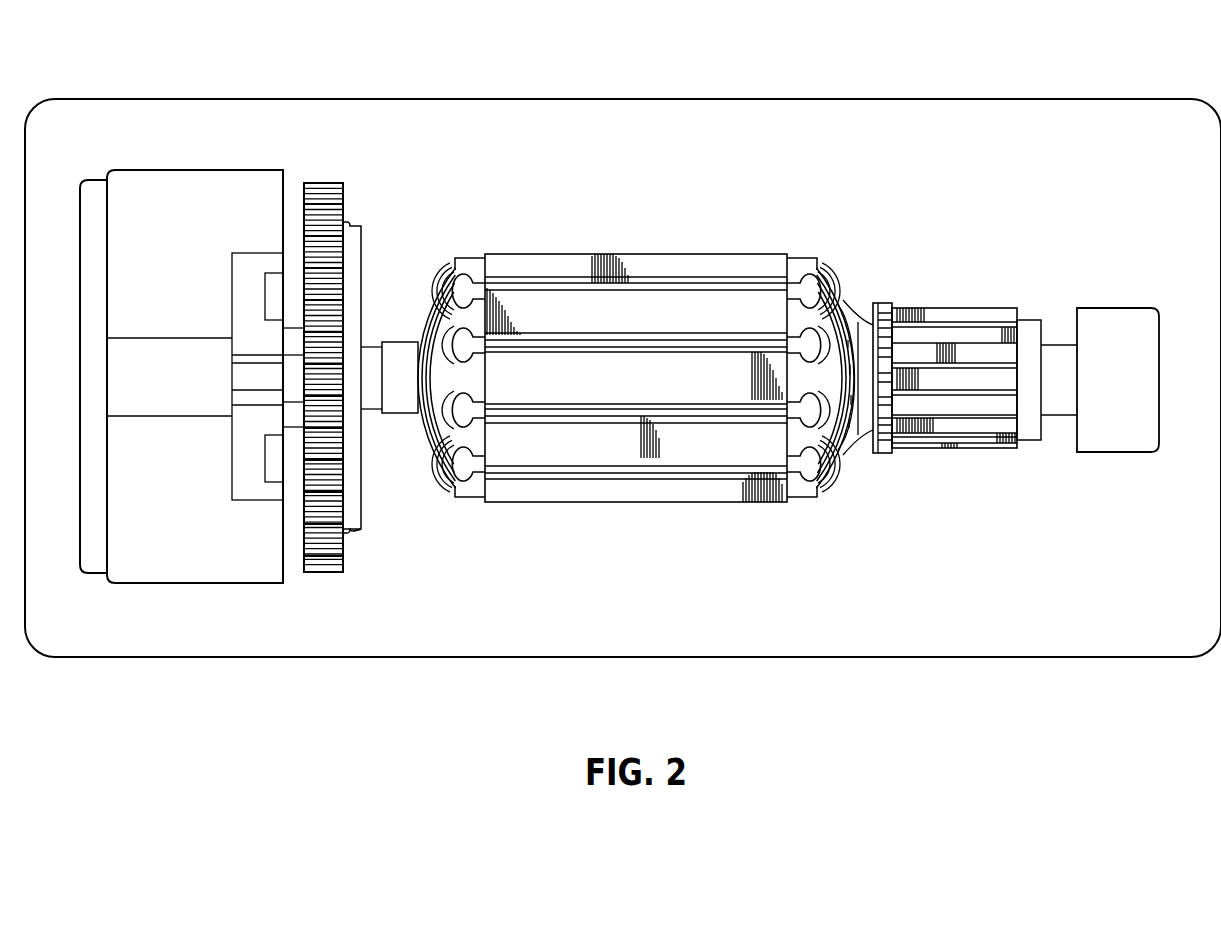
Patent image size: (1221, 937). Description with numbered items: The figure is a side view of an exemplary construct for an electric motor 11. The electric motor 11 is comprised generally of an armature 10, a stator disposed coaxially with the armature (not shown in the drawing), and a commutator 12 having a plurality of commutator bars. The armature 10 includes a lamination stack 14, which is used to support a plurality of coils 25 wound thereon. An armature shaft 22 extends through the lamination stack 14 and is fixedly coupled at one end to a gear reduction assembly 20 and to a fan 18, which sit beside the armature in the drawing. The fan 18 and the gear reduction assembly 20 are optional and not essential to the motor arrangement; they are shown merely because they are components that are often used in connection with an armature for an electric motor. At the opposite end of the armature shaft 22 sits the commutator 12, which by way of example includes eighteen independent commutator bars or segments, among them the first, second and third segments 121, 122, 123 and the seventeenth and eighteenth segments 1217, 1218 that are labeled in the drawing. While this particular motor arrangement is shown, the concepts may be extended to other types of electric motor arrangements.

The electric motor 11 is at (840, 96).
The gear reduction assembly 20 is at (222, 583).
The fan 18 is at (325, 182).
The armature shaft 22 is at (370, 355).
The armature 10 is at (639, 377).
The lamination stack 14 is at (742, 300).
The coils 25 is at (432, 492).
The commutator 12 is at (927, 295).
The commutator bar 121 is at (1003, 381).
The commutator bar 122 is at (990, 355).
The commutator bar 123 is at (966, 333).
The commutator bar 1217 is at (940, 425).
The commutator bar 1218 is at (958, 407).